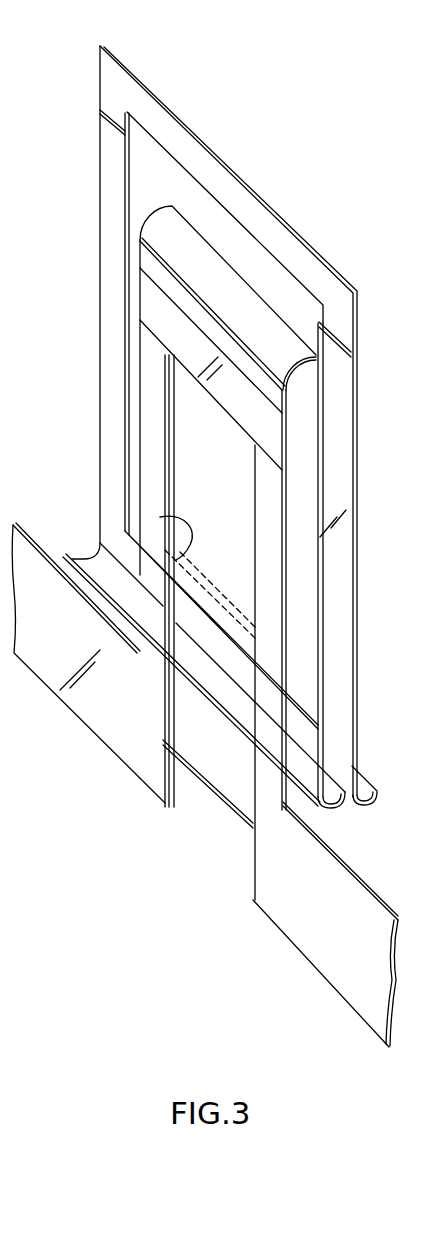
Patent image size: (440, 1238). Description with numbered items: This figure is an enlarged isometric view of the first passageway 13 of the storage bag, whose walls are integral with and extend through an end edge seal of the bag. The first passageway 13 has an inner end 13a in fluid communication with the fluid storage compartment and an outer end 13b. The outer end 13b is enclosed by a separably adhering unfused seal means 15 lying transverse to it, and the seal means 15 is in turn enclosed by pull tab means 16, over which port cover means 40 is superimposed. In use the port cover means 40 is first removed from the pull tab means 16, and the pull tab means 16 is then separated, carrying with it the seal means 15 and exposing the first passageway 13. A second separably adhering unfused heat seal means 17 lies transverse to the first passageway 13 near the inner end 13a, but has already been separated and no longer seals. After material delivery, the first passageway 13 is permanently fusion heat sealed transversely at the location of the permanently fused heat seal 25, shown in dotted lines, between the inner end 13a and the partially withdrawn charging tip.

The port cover means 40 is at (340, 367).
The seal means 15 is at (327, 431).
The pull tab means 16 is at (300, 378).
The first passageway 13 is at (190, 481).
The inner end 13a is at (244, 852).
The outer end 13b is at (186, 399).
The permanently fused heat seal 25 is at (165, 517).
The second separably adhering unfused heat seal means 17 is at (228, 803).